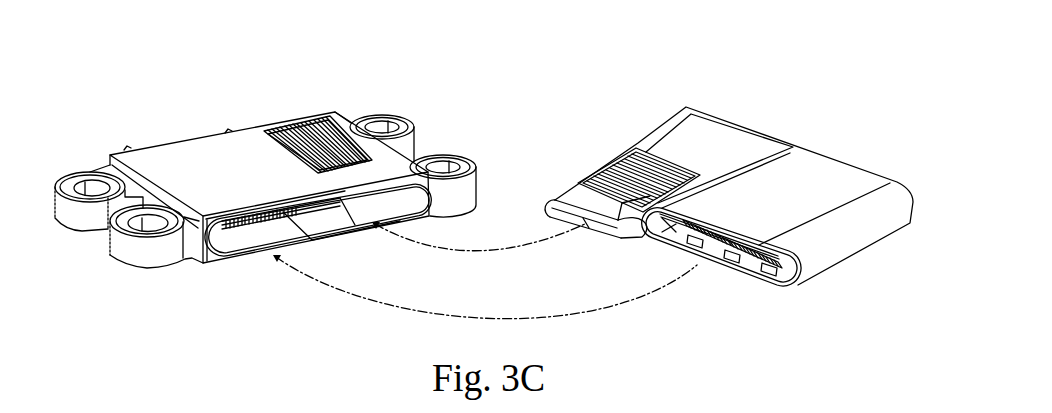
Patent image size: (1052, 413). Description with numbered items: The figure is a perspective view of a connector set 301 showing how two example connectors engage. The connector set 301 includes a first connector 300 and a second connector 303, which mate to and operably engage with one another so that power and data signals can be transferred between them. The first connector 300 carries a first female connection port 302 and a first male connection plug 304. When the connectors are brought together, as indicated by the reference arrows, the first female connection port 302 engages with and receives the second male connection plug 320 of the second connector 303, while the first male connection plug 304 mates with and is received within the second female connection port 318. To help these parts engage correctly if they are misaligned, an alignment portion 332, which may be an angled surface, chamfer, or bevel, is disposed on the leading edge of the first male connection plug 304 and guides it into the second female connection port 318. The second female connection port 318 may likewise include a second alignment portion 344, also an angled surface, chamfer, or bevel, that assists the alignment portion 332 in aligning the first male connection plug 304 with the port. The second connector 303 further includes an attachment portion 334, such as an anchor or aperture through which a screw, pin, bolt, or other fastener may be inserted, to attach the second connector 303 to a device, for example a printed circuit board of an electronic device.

The first connector 300 is at (880, 274).
The connector set 301 is at (140, 96).
The first female connection port 302 is at (720, 284).
The second connector 303 is at (182, 285).
The first male connection plug 304 is at (571, 158).
The second female connection port 318 is at (399, 216).
The second male connection plug 320 is at (247, 245).
The alignment portion 332 is at (579, 193).
The attachment portion 334 is at (88, 222).
The second alignment portion 344 is at (343, 222).